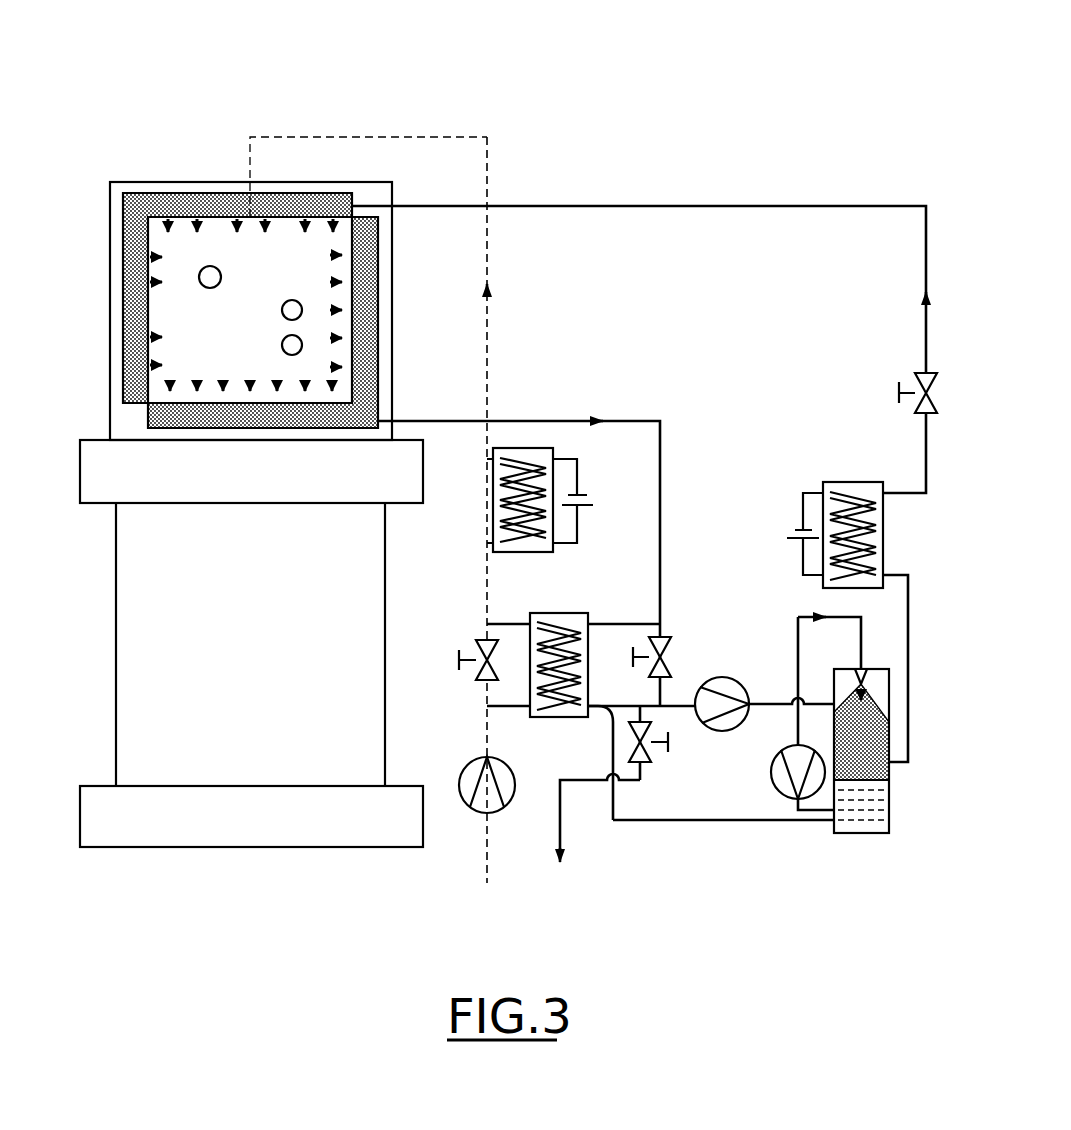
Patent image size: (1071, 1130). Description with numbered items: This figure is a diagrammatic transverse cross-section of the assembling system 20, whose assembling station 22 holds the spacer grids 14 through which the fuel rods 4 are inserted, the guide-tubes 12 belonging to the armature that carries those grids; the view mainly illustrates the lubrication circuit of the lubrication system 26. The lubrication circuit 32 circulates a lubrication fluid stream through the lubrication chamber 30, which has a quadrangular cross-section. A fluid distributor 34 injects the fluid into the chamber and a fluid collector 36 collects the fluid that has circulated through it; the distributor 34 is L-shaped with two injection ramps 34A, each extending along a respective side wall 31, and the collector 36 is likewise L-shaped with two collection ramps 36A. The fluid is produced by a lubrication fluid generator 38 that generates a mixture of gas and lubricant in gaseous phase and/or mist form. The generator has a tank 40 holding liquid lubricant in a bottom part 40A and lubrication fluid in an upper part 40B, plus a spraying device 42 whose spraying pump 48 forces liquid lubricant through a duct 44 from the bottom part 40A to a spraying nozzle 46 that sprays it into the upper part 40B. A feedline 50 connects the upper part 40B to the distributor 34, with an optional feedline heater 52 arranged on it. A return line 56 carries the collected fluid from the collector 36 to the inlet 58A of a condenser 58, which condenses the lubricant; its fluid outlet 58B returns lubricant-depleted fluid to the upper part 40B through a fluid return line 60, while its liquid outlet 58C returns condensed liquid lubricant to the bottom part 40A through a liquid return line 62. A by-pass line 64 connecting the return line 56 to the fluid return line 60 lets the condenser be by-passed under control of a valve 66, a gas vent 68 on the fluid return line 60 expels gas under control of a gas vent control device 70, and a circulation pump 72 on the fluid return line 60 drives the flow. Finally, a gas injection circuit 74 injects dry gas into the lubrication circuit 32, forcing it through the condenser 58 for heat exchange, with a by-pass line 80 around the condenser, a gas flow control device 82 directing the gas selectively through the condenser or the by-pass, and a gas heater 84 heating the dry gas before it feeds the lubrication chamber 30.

The assembling system 20 is at (137, 118).
The assembling station 22 is at (102, 192).
The fluid distributor 34 is at (197, 192).
The injection ramps 34A is at (315, 205).
The spacer grids 14 is at (223, 252).
The fuel rods 4 is at (208, 288).
The lubrication chamber 30 is at (250, 302).
The side wall 31 is at (140, 420).
The fluid collector 36 is at (390, 376).
The collection ramps 36A is at (368, 304).
The guide-tubes 12 is at (298, 353).
The lubrication circuit 32 is at (715, 262).
The feedline 50 is at (596, 206).
The lubrication system 26 is at (940, 236).
The feedline heater 52 is at (873, 545).
The return line 56 is at (545, 420).
The gas heater 84 is at (503, 480).
The gas flow control device 82 is at (478, 643).
The by-pass line 80 is at (487, 697).
The gas injection circuit 74 is at (477, 727).
The condenser 58 is at (578, 628).
The inlet 58A is at (618, 624).
The fluid outlet 58B is at (627, 700).
The liquid outlet 58C is at (613, 722).
The by-pass line 64 is at (662, 637).
The valve 66 is at (670, 653).
The gas vent control device 70 is at (648, 765).
The gas vent 68 is at (556, 826).
The fluid return line 60 is at (673, 708).
The liquid return line 62 is at (655, 821).
The circulation pump 72 is at (738, 722).
The spraying device 42 is at (762, 795).
The spraying pump 48 is at (772, 772).
The duct 44 is at (865, 640).
The spraying nozzle 46 is at (864, 676).
The tank 40 is at (848, 835).
The bottom part 40A is at (870, 818).
The upper part 40B is at (866, 750).
The lubrication fluid generator 38 is at (878, 848).